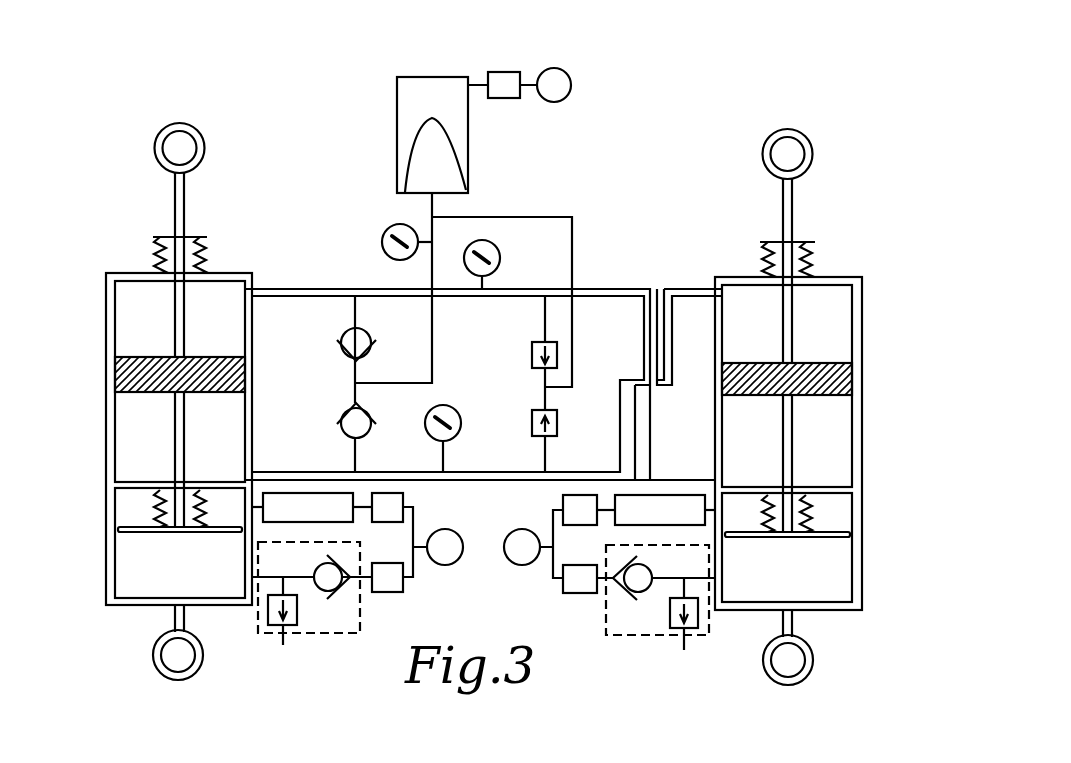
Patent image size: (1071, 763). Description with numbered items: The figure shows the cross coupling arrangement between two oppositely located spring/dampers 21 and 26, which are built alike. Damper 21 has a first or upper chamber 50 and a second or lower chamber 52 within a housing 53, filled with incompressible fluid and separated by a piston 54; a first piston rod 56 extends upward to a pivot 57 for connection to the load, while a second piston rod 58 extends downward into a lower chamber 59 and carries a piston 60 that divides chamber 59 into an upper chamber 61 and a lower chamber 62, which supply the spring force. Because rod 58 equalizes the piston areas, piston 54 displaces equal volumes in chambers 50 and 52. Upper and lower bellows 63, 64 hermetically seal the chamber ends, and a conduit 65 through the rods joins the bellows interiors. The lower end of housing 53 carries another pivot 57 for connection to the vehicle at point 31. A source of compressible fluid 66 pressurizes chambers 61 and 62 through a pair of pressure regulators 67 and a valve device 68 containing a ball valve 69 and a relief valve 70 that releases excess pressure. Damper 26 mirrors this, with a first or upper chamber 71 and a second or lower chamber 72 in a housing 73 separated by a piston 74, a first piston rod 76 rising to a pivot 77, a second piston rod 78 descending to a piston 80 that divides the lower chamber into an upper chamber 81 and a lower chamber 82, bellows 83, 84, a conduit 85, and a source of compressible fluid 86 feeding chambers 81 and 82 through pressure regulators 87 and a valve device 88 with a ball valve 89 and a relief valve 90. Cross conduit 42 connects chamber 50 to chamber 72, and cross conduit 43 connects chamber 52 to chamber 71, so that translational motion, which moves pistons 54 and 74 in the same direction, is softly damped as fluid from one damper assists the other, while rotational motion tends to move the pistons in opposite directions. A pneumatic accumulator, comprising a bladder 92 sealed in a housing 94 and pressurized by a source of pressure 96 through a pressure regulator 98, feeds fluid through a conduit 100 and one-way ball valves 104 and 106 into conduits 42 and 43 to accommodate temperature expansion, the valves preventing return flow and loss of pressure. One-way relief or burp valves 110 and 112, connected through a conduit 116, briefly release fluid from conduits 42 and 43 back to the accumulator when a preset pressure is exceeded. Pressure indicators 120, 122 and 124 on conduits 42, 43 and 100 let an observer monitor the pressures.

The spring/damper 21 is at (106, 455).
The spring/damper 26 is at (862, 454).
The connection point 31 is at (432, 77).
The cross conduit 42 is at (324, 288).
The cross conduit 43 is at (312, 470).
The first or upper chamber 50 is at (192, 329).
The second or lower chamber 52 is at (192, 448).
The housing 53 is at (117, 337).
The piston 54 is at (140, 395).
The first piston rod 56 is at (185, 205).
The pivot 57 is at (180, 123).
The second piston rod 58 is at (175, 455).
The lower chamber 59 is at (192, 583).
The piston 60 is at (171, 534).
The upper chamber 61 is at (108, 512).
The lower chamber 62 is at (116, 549).
The first bellows 63 is at (153, 248).
The second bellows 64 is at (142, 497).
The conduit 65 is at (175, 300).
The source of compressible fluid 66 is at (462, 556).
The pressure regulators 67 is at (403, 502).
The valve device 68 is at (352, 522).
The ball valve 69 is at (314, 568).
The relief valve 70 is at (297, 612).
The upper right chamber 71 is at (732, 333).
The second or lower chamber 72 is at (732, 458).
The housing 73 is at (852, 335).
The piston 74 is at (816, 396).
The first piston rod 76 is at (782, 202).
The pivot 77 is at (787, 128).
The second piston rod 78 is at (793, 464).
The piston 80 is at (795, 538).
The upper chamber 81 is at (852, 517).
The lower chamber 82 is at (850, 560).
The first bellows 83 is at (815, 250).
The second bellows 84 is at (812, 501).
The conduit 85 is at (794, 300).
The source of compressible fluid 86 is at (510, 535).
The pressure regulators 87 is at (563, 503).
The valve device 88 is at (615, 525).
The ball valve 89 is at (650, 568).
The relief valve 90 is at (670, 612).
The bladder 92 is at (466, 137).
The housing 94 is at (397, 118).
The source of pressure 96 is at (571, 90).
The pressure regulator 98 is at (502, 72).
The conduit 100 is at (432, 350).
The one-way or ball valve 104 is at (342, 341).
The one-way or ball valve 106 is at (342, 410).
The relief or burp valve 110 is at (532, 344).
The relief or burp valve 112 is at (532, 426).
The conduit 116 is at (574, 232).
The pressure indicator 120 is at (498, 250).
The pressure indicator 122 is at (458, 416).
The pressure indicator 124 is at (390, 225).